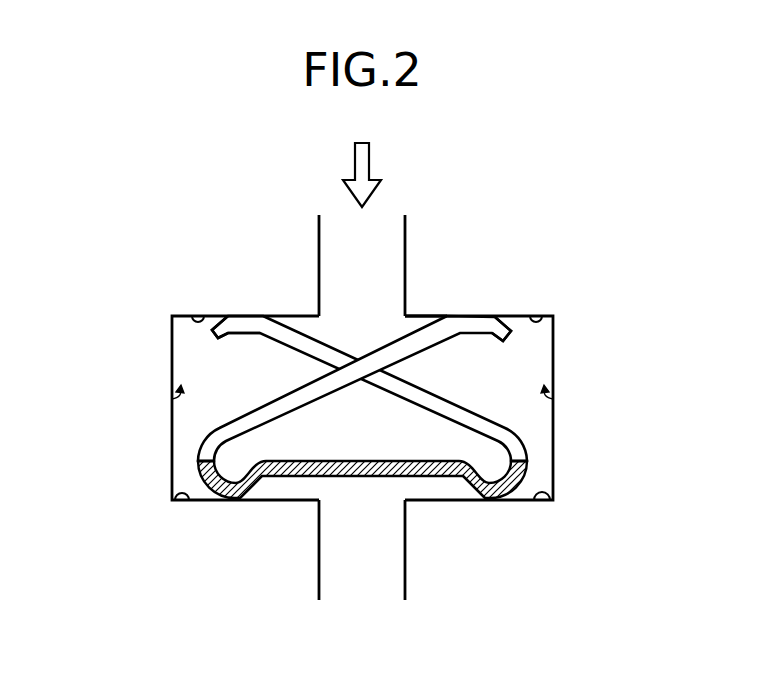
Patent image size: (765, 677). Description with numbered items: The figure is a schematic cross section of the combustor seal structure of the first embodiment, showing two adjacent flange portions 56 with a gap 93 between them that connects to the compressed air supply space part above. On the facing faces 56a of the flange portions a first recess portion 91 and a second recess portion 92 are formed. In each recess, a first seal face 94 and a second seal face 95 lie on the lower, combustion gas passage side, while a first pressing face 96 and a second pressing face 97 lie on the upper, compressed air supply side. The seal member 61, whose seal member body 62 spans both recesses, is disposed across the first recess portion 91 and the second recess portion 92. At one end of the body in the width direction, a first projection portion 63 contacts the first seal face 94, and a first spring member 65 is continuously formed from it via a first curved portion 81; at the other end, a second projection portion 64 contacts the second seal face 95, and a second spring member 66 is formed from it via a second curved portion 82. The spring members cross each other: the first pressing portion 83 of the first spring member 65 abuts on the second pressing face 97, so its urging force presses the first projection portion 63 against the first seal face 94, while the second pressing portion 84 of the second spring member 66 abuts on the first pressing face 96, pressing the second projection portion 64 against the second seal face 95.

The flange portion 56 is at (50, 234).
The facing face 56a is at (318, 592).
The gap 93 is at (386, 229).
The seal member 61 is at (392, 318).
The seal member body 62 is at (370, 478).
The first projection portion 63 is at (233, 500).
The second projection portion 64 is at (497, 500).
The first spring member 65 is at (440, 333).
The second spring member 66 is at (305, 338).
The first curved portion 81 is at (200, 468).
The second curved portion 82 is at (520, 467).
The first pressing portion 83 is at (497, 322).
The second pressing portion 84 is at (246, 326).
The first recess portion 91 is at (172, 399).
The second recess portion 92 is at (553, 399).
The first seal face 94 is at (180, 496).
The second seal face 95 is at (548, 497).
The first pressing face 96 is at (197, 316).
The second pressing face 97 is at (540, 316).